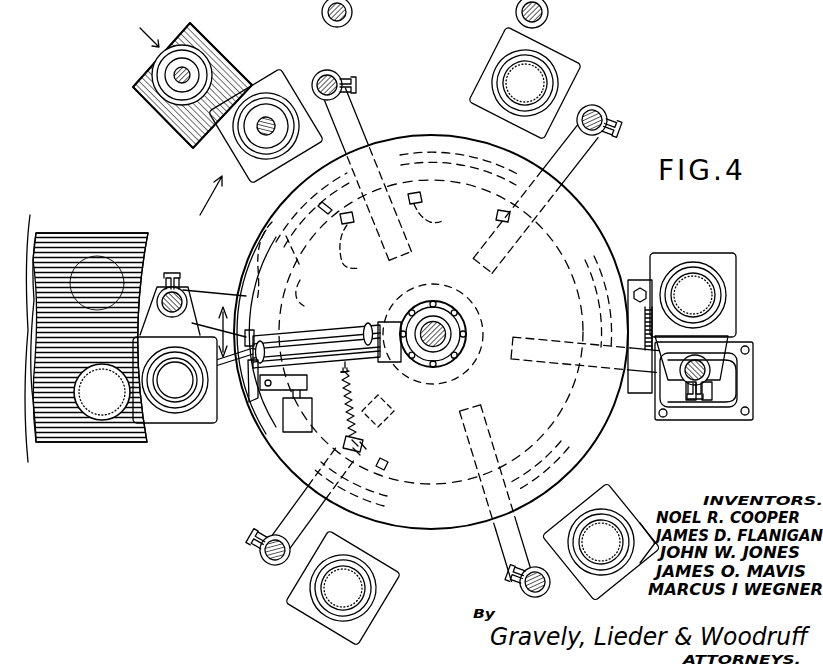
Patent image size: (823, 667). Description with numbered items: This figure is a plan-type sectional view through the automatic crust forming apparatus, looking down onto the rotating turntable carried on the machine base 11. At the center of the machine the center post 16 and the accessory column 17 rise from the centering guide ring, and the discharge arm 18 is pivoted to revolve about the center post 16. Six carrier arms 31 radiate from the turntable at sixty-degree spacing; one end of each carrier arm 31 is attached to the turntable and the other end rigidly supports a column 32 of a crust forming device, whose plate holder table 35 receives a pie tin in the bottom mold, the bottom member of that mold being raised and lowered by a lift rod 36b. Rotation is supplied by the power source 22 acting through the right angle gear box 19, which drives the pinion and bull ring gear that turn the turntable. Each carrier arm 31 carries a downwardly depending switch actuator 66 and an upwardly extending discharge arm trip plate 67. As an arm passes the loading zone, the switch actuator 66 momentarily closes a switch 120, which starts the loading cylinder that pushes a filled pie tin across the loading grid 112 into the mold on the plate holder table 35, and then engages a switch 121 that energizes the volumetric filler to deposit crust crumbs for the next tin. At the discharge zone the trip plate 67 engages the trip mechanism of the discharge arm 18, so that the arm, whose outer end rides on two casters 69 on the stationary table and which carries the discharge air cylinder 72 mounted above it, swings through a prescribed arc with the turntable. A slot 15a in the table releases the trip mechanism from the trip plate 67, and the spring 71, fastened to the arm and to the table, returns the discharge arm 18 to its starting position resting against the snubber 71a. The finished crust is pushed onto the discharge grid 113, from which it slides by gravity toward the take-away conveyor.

The machine base 11 is at (426, 488).
The slot 15a is at (277, 256).
The center post 16 is at (450, 362).
The accessory column 17 is at (440, 335).
The discharge arm 18 is at (366, 360).
The right angle gear box 19 is at (638, 280).
The power source 22 is at (698, 420).
The carrier arm 31 is at (368, 127).
The column 32 is at (268, 0).
The plate holder table 35 is at (252, 187).
The lift rod 36b is at (578, 2).
The switch actuator 66 is at (577, 326).
The discharge arm trip plate 67 is at (600, 268).
The casters 69 is at (240, 300).
The spring 71 is at (362, 404).
The snubber 71a is at (286, 434).
The discharge air cylinder 72 is at (334, 336).
The loading grid 112 is at (240, 66).
The discharge grid 113 is at (76, 446).
The switch 120 is at (354, 251).
The switch 121 is at (444, 218).